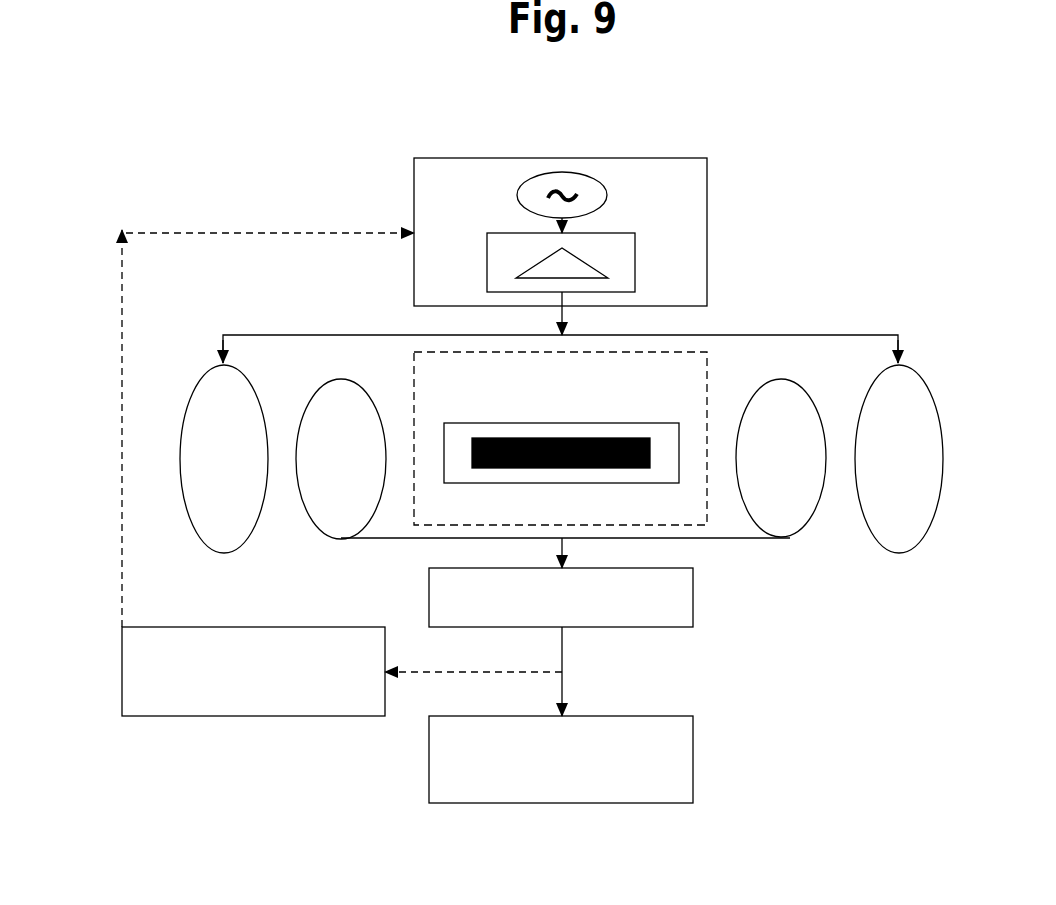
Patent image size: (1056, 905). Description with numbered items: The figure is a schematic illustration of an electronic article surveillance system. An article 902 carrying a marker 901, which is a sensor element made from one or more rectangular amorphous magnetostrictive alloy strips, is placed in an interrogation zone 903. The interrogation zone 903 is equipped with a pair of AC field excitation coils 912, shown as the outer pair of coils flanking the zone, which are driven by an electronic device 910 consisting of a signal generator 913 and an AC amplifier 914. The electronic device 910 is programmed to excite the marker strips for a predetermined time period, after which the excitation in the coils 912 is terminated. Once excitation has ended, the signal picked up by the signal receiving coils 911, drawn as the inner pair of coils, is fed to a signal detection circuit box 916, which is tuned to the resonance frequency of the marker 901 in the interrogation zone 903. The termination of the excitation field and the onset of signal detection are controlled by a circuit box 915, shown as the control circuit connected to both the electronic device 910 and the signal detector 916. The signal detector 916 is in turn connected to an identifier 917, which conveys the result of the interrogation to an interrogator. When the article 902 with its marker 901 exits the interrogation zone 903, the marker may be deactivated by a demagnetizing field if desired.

The marker 901 is at (547, 468).
The article 902 is at (535, 423).
The interrogation zone 903 is at (560, 438).
The electronic device 910 is at (414, 158).
The signal receiving coils 911 is at (313, 528).
The AC field excitation coils 912 is at (195, 538).
The signal generator 913 is at (610, 189).
The AC amplifier 914 is at (636, 262).
The circuit box 915 is at (195, 718).
The signal detection circuit box 916 is at (695, 613).
The identifier 917 is at (693, 760).